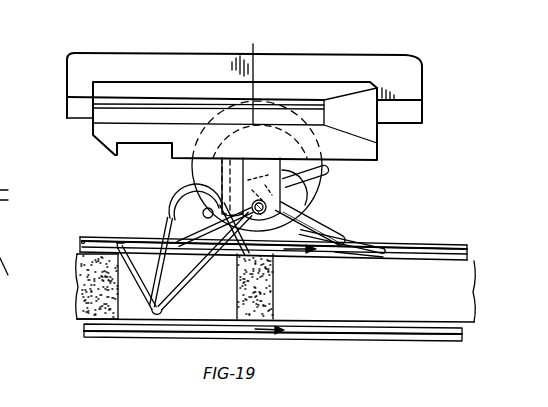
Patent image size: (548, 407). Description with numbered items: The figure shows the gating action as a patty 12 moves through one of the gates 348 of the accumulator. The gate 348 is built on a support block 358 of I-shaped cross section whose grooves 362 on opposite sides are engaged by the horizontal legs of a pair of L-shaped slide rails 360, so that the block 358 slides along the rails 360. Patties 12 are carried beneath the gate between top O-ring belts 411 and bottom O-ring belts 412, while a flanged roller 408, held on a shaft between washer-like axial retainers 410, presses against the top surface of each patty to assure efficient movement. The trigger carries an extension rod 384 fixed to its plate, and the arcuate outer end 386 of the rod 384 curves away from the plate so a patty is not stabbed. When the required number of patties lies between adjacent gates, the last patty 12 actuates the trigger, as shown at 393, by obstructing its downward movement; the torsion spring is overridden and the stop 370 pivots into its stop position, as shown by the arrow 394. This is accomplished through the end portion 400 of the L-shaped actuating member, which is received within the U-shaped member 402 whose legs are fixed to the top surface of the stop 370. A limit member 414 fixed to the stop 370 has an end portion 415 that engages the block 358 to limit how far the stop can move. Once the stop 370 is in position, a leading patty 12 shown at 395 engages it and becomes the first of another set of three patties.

The gate 348 is at (281, 83).
The L-shaped slide rails 360 is at (160, 58).
The grooves 362 is at (185, 103).
The support block 358 is at (327, 88).
The flanged roller 408 is at (248, 76).
The end portion of actuating member 400 is at (206, 184).
The axial retainers 410 is at (300, 160).
The end portion of limit member 415 is at (322, 177).
The trigger actuation position 393 is at (346, 222).
The arcuate outer end 386 is at (386, 247).
The extension rod 384 is at (354, 255).
The U-shaped member 402 is at (170, 197).
The arrow 394 is at (157, 265).
The stop 370 is at (146, 312).
The limit member 414 is at (173, 312).
The patty 12 is at (77, 261).
The top O-ring belts 411 is at (447, 246).
The bottom O-ring belts 412 is at (411, 332).
The leading patty position 395 is at (77, 307).